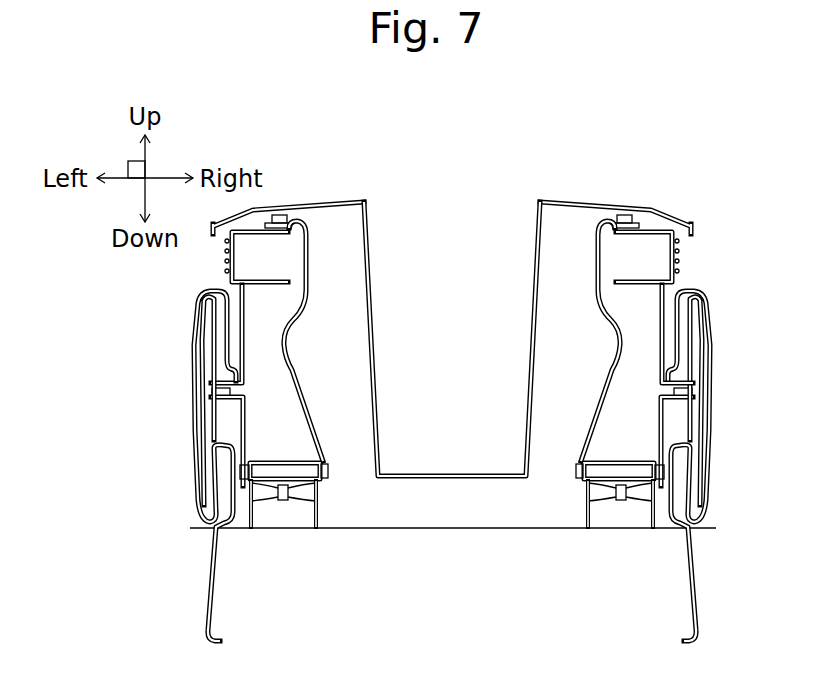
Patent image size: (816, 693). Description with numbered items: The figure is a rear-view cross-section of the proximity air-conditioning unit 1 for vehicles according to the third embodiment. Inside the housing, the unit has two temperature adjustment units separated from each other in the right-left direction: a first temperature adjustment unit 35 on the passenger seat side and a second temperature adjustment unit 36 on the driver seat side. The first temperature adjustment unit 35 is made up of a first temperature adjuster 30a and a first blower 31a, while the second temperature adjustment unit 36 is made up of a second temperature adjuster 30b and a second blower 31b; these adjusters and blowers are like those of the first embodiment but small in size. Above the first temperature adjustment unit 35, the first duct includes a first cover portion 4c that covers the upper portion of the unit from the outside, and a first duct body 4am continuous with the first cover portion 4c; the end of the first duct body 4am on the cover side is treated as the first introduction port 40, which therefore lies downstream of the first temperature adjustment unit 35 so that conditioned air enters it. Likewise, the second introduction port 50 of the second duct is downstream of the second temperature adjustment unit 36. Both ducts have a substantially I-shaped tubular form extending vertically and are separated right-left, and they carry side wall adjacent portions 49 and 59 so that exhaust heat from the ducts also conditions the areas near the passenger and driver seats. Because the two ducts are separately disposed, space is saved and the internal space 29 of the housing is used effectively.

The proximity air-conditioning unit for vehicles 1 is at (600, 199).
The internal space 29 is at (585, 241).
The first duct body 4am is at (294, 368).
The side wall adjacent portion 49 is at (248, 354).
The side wall adjacent portion 59 is at (654, 348).
The first introduction port 40 is at (324, 462).
The second introduction port 50 is at (636, 463).
The first temperature adjuster 30a is at (291, 468).
The second temperature adjuster 30b is at (632, 466).
The first blower 31a is at (293, 502).
The second blower 31b is at (627, 502).
The first temperature adjustment unit 35 is at (318, 503).
The second temperature adjustment unit 36 is at (586, 500).
The first cover portion 4c is at (329, 467).